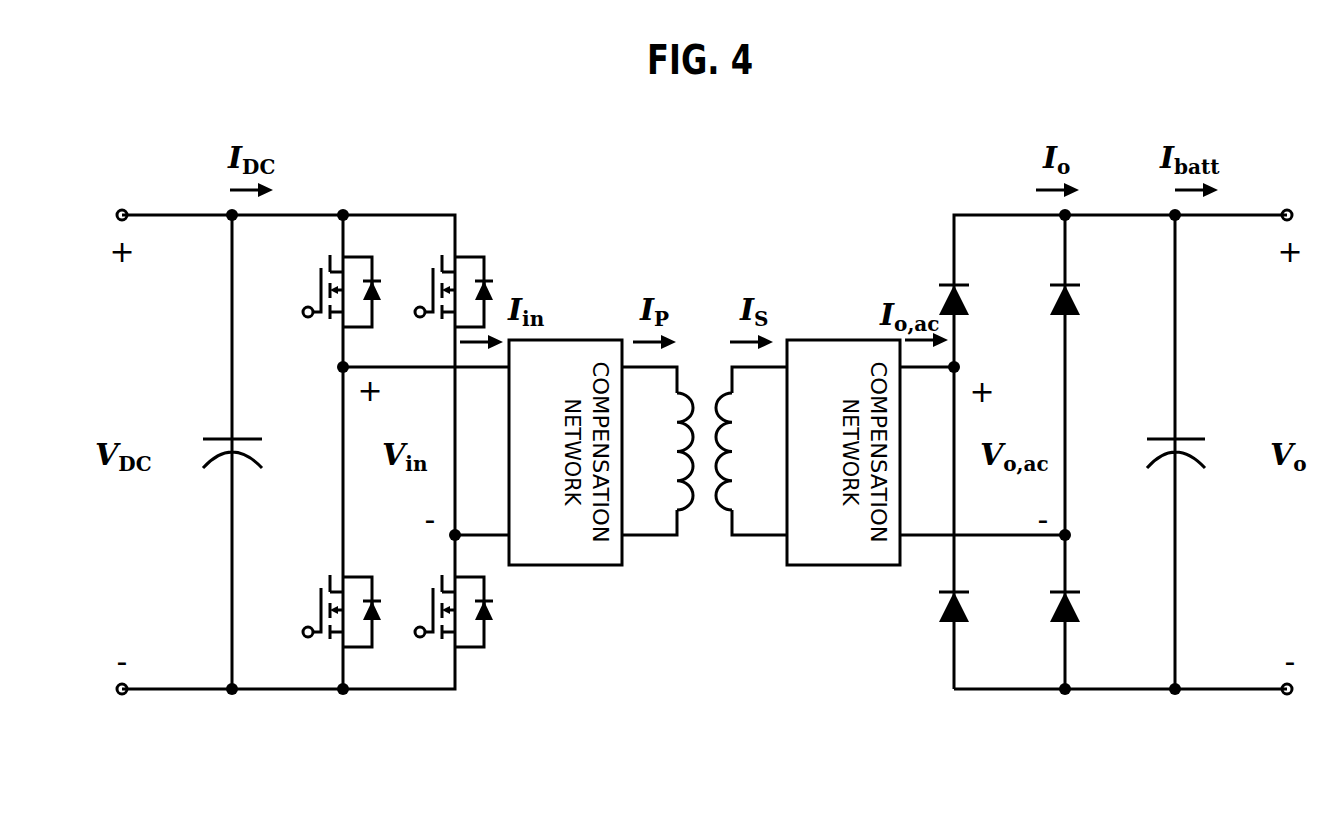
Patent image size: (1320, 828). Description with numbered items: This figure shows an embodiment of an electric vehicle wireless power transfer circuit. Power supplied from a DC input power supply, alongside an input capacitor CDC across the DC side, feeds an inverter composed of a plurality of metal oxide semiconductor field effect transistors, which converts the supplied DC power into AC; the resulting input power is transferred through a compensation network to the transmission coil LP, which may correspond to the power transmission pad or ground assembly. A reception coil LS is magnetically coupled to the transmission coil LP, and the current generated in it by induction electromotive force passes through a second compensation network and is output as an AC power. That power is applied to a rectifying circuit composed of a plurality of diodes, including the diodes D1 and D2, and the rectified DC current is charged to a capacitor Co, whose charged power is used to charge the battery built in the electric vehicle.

The DC link capacitor CDC is at (206, 452).
The capacitor Co is at (1157, 452).
The transmission coil LP is at (662, 451).
The reception coil LS is at (748, 451).
The diode D1 is at (931, 436).
The diode D2 is at (1041, 436).